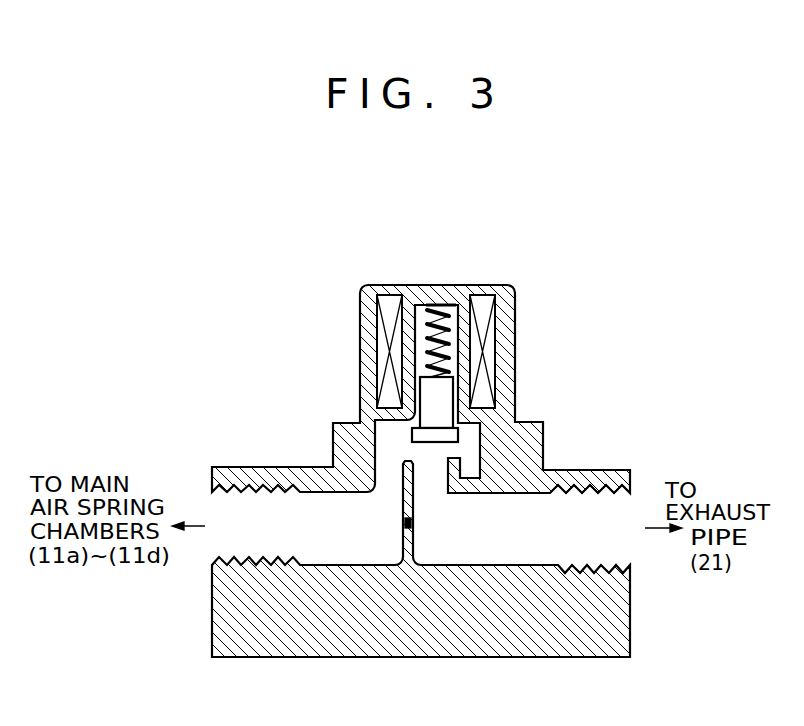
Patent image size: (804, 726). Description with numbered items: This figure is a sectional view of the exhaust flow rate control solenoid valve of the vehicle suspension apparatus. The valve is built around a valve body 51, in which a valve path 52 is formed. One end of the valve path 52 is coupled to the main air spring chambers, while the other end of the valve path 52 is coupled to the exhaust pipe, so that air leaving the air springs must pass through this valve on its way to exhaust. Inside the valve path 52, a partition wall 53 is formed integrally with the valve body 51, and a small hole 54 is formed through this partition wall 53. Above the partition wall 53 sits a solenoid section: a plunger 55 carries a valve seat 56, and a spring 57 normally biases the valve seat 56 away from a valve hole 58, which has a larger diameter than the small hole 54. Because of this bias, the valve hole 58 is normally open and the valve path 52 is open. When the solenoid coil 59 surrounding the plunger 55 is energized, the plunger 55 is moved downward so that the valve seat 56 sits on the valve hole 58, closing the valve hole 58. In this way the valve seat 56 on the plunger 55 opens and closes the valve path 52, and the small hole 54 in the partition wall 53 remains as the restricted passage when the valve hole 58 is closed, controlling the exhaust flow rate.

The valve body 51 is at (632, 613).
The valve path 52 is at (603, 498).
The partition wall 53 is at (404, 497).
The small hole 54 is at (414, 523).
The plunger 55 is at (453, 389).
The valve seat 56 is at (458, 435).
The spring 57 is at (443, 305).
The valve hole 58 is at (426, 460).
The solenoid coil 59 is at (490, 338).